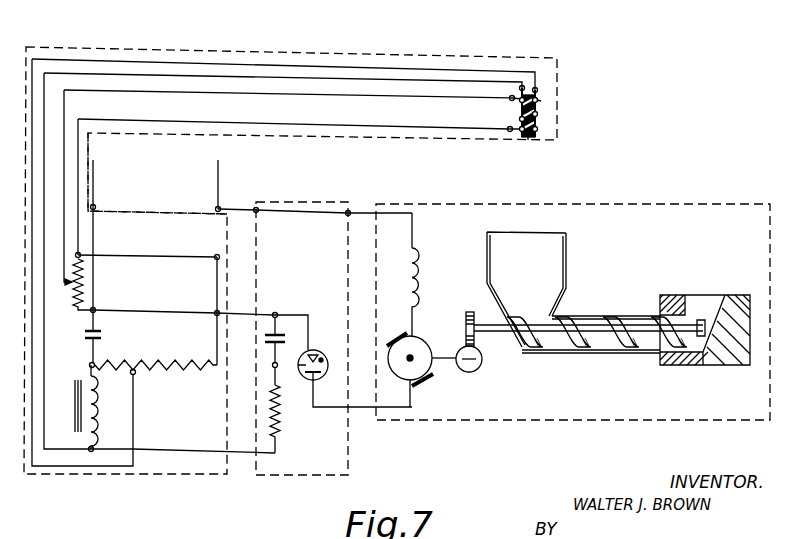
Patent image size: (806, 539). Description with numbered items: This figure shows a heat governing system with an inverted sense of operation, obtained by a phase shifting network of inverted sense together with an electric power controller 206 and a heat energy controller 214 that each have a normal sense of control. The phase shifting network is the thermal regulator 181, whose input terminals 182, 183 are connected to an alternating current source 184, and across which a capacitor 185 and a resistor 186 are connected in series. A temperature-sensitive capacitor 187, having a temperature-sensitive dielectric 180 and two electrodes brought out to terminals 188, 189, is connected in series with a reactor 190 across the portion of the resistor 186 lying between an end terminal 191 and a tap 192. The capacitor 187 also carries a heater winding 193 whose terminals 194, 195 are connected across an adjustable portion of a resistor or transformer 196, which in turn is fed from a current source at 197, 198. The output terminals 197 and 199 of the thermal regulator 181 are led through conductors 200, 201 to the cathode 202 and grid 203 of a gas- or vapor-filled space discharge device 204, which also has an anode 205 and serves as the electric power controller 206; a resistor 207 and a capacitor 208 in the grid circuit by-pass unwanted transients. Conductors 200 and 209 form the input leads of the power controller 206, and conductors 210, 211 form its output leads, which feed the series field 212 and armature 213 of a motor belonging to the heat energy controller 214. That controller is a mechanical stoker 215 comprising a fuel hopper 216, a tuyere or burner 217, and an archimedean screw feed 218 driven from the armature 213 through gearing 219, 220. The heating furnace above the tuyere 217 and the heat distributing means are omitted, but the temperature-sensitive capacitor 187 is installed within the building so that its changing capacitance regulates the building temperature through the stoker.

The temperature-sensitive dielectric 180 is at (530, 139).
The thermal regulator 181 is at (157, 211).
The input terminal 182 is at (95, 206).
The input terminal 183 is at (215, 208).
The alternating current source 184 is at (96, 164).
The capacitor 185 is at (102, 335).
The resistor 186 is at (160, 365).
The temperature-sensitive capacitor 187 is at (540, 98).
The terminal 188 is at (522, 86).
The terminal 189 is at (537, 88).
The reactor 190 is at (74, 393).
The end terminal 191 is at (90, 364).
The tap 192 is at (136, 376).
The heater winding 193 is at (541, 102).
The terminal 194 is at (509, 99).
The terminal 195 is at (510, 126).
The resistor or transformer 196 is at (84, 280).
The current source terminal 197 is at (96, 309).
The current source terminal 198 is at (215, 259).
The output terminal 199 is at (93, 447).
The conductor 200 is at (163, 313).
The conductor 201 is at (243, 458).
The cathode 202 is at (316, 352).
The grid 203 is at (305, 375).
The space discharge device 204 is at (324, 362).
The anode 205 is at (318, 380).
The electric power controller 206 is at (311, 202).
The resistor 207 is at (279, 428).
The capacitor 208 is at (268, 339).
The conductor 209 is at (257, 207).
The conductor 210 is at (360, 211).
The conductor 211 is at (365, 408).
The series field 212 is at (400, 274).
The armature 213 is at (418, 338).
The heat energy controller 214 is at (521, 208).
The mechanical stoker 215 is at (607, 316).
The fuel hopper 216 is at (569, 254).
The tuyere or burner 217 is at (704, 296).
The archimedean screw feed 218 is at (637, 350).
The gearing 219 is at (477, 370).
The gearing 220 is at (476, 343).